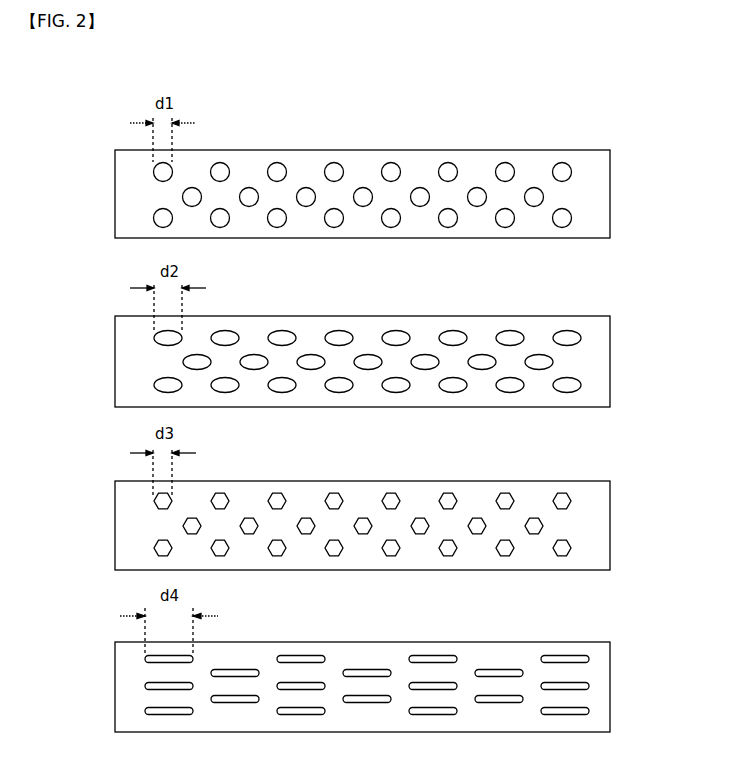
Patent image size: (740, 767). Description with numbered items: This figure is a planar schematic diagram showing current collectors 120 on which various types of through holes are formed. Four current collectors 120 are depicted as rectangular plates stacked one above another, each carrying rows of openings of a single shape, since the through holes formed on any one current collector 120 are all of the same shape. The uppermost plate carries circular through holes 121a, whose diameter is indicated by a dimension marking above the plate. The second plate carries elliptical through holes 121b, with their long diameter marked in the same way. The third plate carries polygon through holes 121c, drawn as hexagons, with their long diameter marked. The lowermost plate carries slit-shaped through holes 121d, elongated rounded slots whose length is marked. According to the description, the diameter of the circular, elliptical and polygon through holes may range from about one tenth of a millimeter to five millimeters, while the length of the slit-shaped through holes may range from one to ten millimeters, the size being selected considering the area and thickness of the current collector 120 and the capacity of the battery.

The current collector 120 is at (590, 216).
The circular through hole 121a is at (572, 170).
The elliptical through hole 121b is at (581, 335).
The polygon through hole 121c is at (572, 500).
The slit-shaped through hole 121d is at (590, 656).